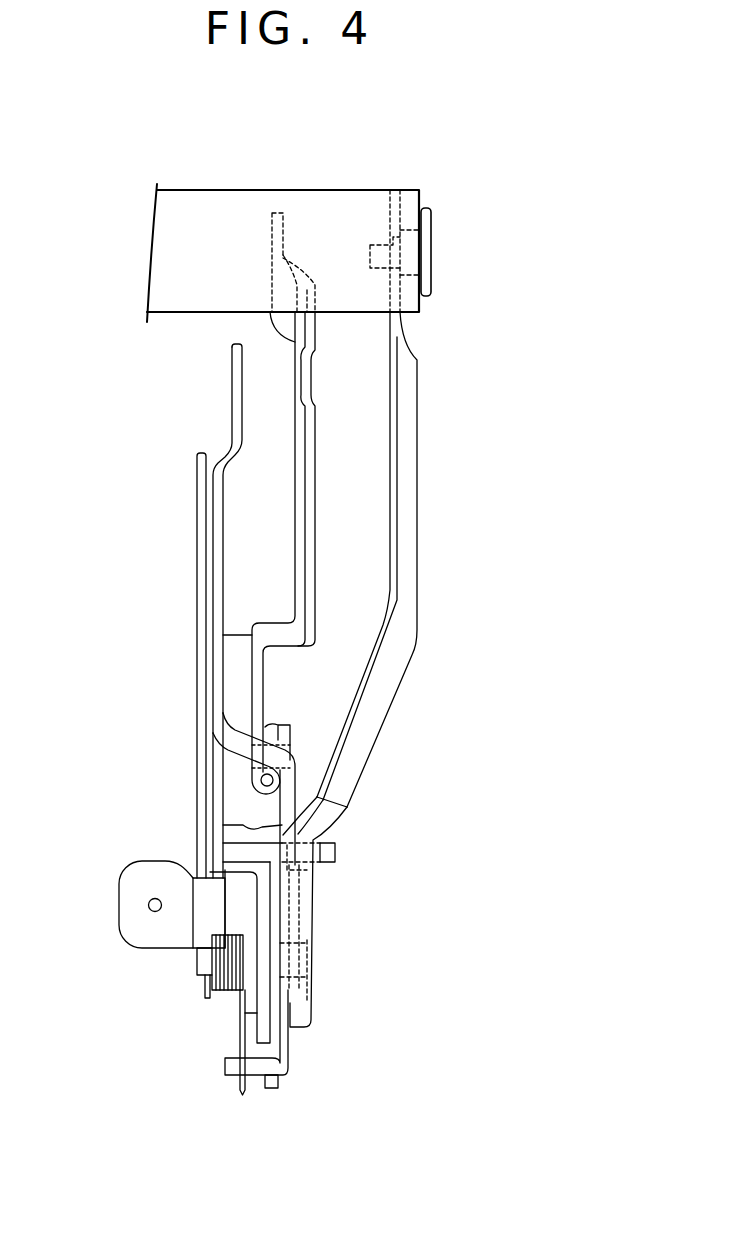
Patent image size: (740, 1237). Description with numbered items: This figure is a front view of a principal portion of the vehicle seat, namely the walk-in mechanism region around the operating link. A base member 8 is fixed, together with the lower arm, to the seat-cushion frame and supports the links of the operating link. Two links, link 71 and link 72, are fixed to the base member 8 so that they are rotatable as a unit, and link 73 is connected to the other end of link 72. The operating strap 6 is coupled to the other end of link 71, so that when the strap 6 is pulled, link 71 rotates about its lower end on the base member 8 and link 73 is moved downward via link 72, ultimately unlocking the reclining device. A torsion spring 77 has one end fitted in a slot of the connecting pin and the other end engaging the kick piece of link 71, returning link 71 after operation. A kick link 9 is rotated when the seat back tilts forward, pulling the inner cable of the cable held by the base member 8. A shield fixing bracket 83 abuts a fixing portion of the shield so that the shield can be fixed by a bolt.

The operating strap 6 is at (421, 194).
The link 71 is at (409, 560).
The kick link 9 is at (290, 493).
The link 73 is at (225, 582).
The base member 8 is at (195, 762).
The shield fixing bracket 83 is at (132, 918).
The link 72 is at (273, 927).
The torsion spring 77 is at (220, 995).